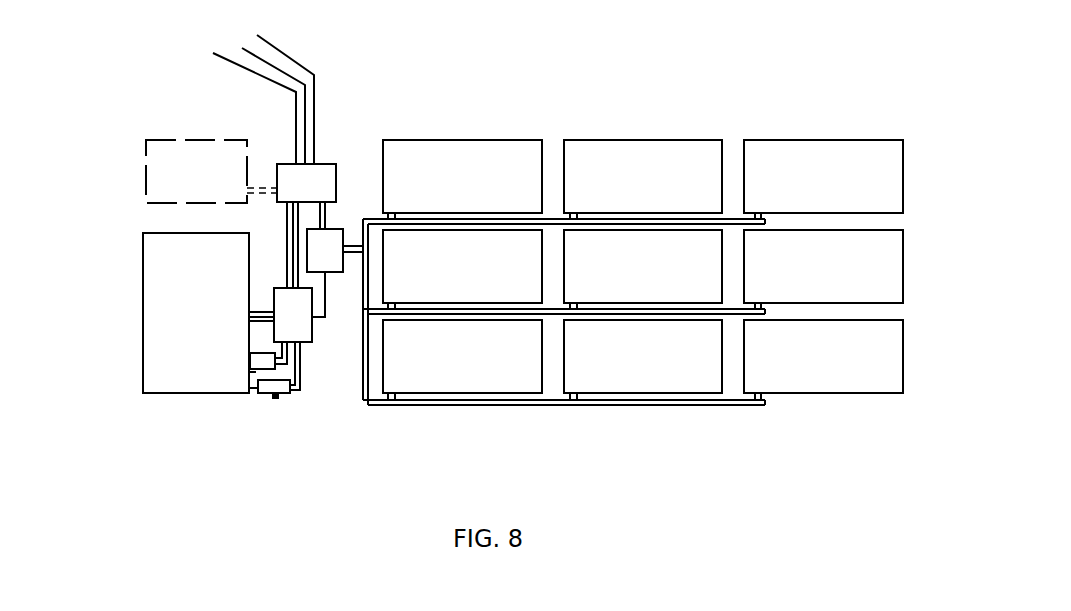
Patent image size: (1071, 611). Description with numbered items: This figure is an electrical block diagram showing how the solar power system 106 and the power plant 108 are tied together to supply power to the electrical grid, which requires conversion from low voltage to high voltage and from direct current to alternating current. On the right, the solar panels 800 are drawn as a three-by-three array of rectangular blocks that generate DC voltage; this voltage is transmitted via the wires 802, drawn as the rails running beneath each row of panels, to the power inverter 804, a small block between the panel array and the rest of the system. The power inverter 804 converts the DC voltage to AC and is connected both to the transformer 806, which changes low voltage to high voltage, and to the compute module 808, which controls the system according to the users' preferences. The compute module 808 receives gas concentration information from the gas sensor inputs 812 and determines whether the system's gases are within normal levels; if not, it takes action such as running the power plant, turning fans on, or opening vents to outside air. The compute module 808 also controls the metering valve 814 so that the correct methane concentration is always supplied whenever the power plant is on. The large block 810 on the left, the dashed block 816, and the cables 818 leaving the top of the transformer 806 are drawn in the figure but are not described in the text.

The solar power system 106 is at (818, 122).
The power plant 108 is at (128, 298).
The solar panels 800 is at (482, 140).
The wires 802 is at (382, 405).
The power inverter 804 is at (333, 272).
The transformer 806 is at (293, 163).
The compute module 808 is at (274, 308).
The base station enclosure 810 is at (142, 337).
The gas sensor inputs 812 is at (255, 371).
The metering valve 814 is at (258, 394).
The optional external unit 816 is at (155, 138).
The cables 818 is at (315, 100).